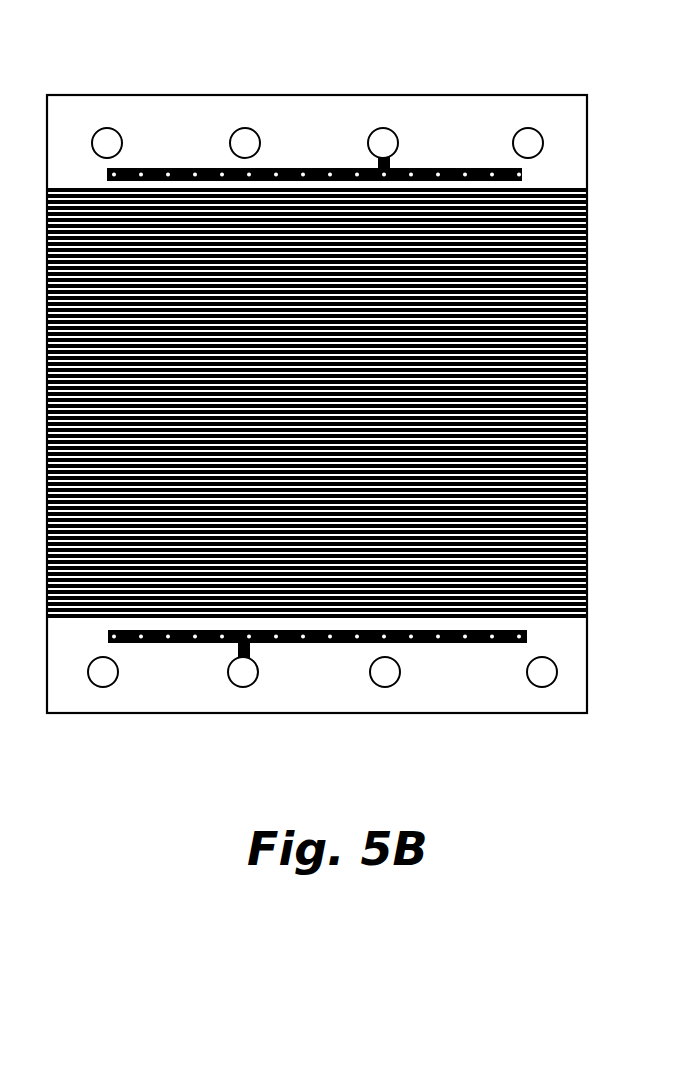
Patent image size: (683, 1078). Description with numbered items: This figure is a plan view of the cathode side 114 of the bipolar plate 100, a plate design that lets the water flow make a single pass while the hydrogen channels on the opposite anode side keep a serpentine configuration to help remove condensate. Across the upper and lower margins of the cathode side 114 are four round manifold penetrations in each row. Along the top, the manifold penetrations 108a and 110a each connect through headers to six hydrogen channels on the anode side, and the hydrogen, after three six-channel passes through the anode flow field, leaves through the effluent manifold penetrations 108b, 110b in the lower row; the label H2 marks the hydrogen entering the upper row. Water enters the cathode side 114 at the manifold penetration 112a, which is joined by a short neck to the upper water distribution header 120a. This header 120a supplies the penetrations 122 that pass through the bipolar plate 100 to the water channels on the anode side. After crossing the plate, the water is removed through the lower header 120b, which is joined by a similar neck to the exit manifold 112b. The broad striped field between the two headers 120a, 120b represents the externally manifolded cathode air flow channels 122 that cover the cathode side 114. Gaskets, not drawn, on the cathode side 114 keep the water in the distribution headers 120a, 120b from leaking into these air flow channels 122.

The bipolar plate 100 is at (80, 736).
The cathode side 114 is at (162, 137).
The penetrations / cathode air flow channels 122 is at (167, 168).
The water distribution header 120a is at (315, 168).
The header 120b is at (478, 643).
The manifold penetration 110a is at (245, 128).
The effluent manifold penetration 110b is at (103, 687).
The manifold penetration 112a is at (383, 140).
The exit manifold 112b is at (243, 687).
The manifold penetration 108a is at (522, 135).
The effluent manifold penetration 108b is at (385, 687).
The hydrogen H2 is at (485, 78).